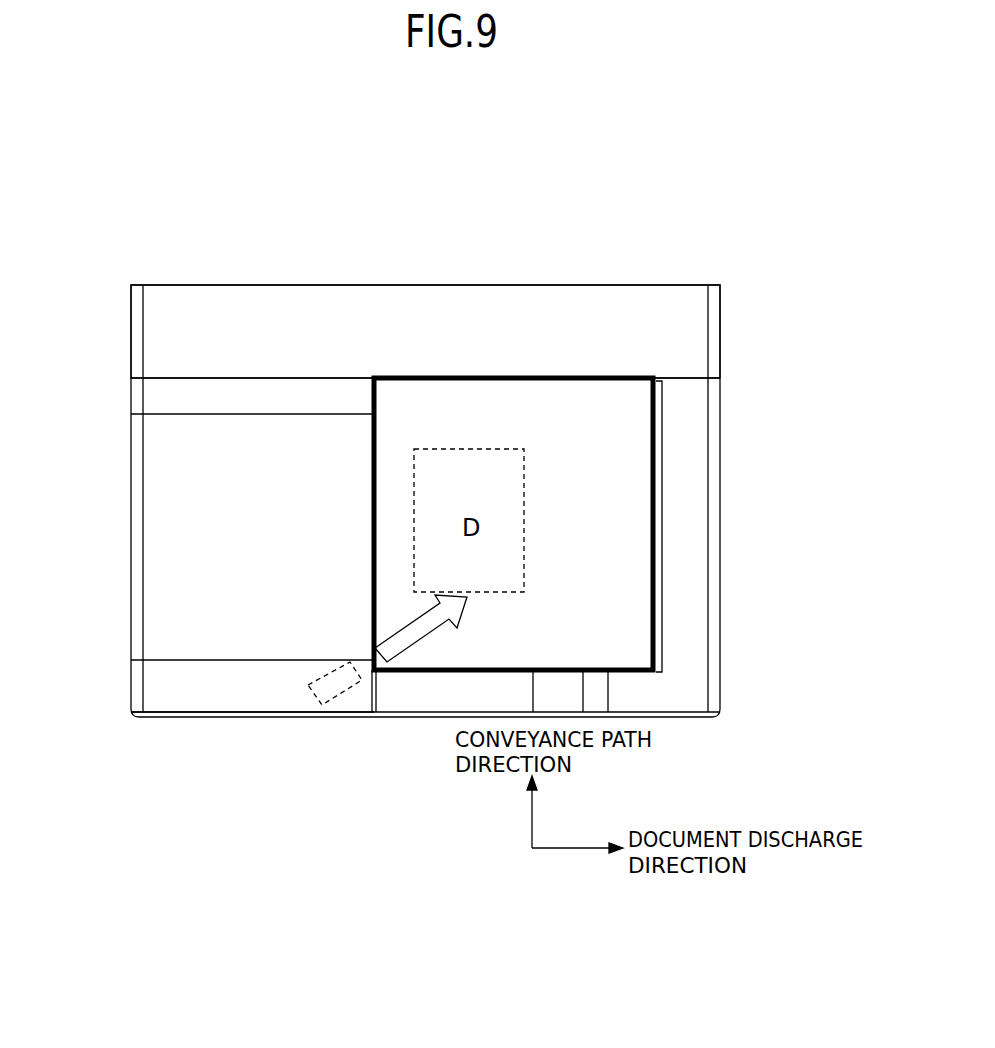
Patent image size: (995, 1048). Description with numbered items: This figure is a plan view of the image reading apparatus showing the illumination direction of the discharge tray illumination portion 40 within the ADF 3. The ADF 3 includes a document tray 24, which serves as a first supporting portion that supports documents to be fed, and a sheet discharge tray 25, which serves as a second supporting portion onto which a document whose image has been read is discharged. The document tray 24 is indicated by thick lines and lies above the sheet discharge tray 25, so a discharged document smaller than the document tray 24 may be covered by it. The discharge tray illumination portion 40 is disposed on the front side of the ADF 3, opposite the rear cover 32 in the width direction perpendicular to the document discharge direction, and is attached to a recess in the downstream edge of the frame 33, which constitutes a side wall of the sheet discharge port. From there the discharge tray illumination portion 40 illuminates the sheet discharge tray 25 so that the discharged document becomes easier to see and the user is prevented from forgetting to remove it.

The ADF 3 is at (131, 600).
The document tray 24 is at (641, 416).
The sheet discharge tray 25 is at (675, 672).
The rear cover 32 is at (508, 297).
The frame 33 is at (208, 702).
The discharge tray illumination portion 40 is at (358, 688).